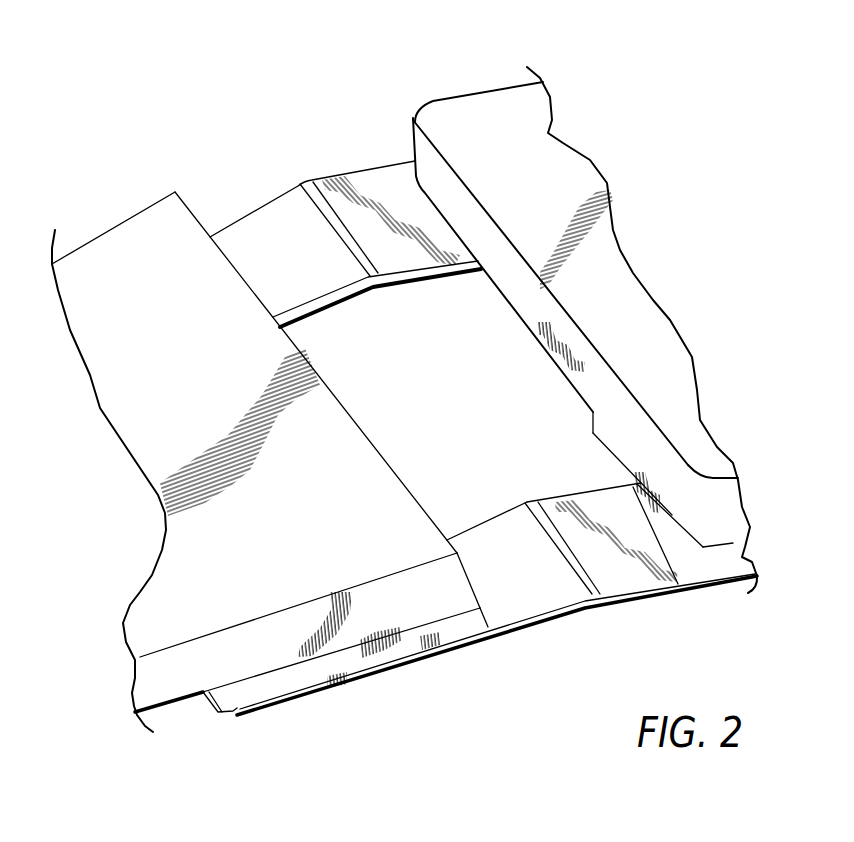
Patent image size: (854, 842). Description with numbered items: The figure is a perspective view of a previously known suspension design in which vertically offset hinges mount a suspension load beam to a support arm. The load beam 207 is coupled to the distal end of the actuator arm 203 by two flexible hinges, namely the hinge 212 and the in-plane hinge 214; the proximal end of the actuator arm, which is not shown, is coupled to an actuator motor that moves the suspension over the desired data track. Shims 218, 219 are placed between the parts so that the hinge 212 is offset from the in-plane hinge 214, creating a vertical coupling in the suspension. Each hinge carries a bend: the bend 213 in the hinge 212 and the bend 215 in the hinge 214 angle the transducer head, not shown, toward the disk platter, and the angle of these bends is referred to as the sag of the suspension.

The actuator arm 203 is at (147, 234).
The load beam 207 is at (498, 107).
The hinge 212 is at (552, 638).
The bend 213 is at (592, 578).
The in-plane hinge 214 is at (232, 203).
The bend 215 is at (317, 208).
The shim 218 is at (227, 703).
The shim 219 is at (725, 563).